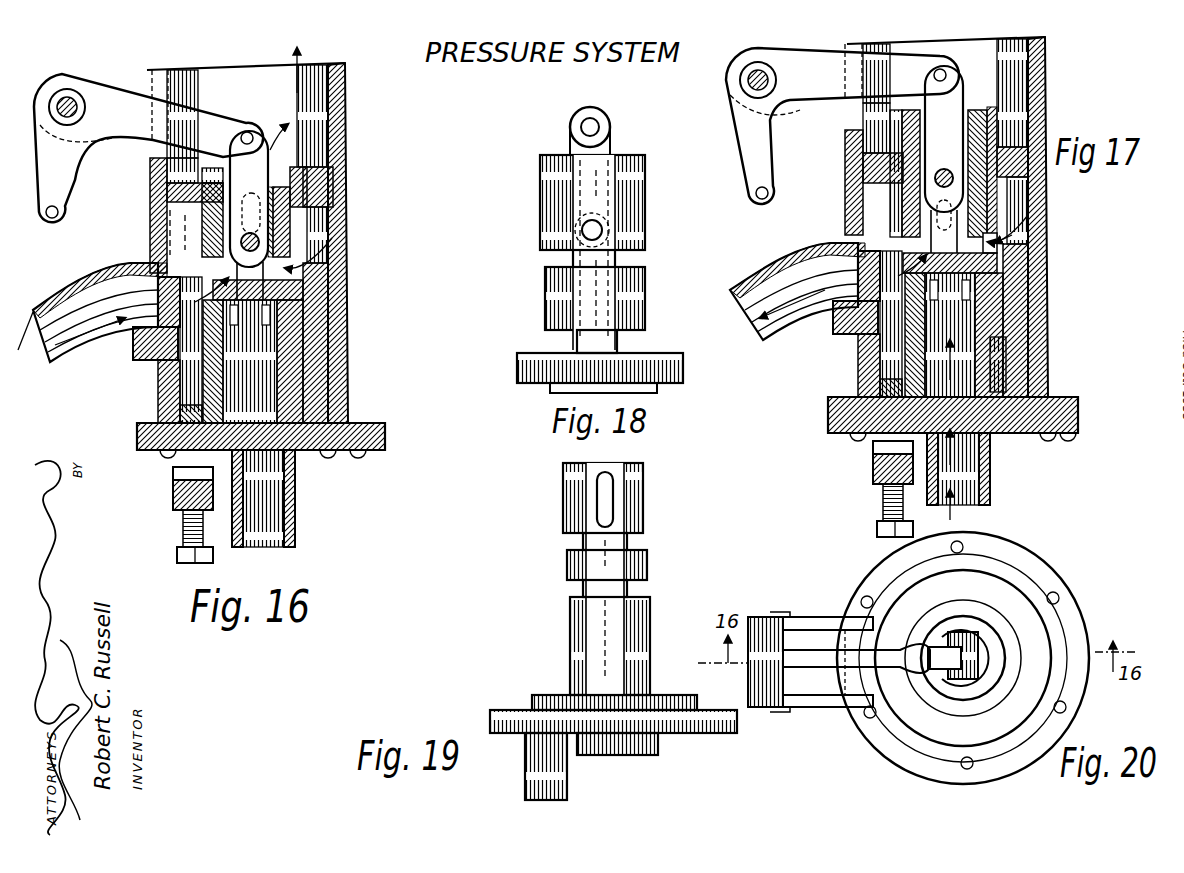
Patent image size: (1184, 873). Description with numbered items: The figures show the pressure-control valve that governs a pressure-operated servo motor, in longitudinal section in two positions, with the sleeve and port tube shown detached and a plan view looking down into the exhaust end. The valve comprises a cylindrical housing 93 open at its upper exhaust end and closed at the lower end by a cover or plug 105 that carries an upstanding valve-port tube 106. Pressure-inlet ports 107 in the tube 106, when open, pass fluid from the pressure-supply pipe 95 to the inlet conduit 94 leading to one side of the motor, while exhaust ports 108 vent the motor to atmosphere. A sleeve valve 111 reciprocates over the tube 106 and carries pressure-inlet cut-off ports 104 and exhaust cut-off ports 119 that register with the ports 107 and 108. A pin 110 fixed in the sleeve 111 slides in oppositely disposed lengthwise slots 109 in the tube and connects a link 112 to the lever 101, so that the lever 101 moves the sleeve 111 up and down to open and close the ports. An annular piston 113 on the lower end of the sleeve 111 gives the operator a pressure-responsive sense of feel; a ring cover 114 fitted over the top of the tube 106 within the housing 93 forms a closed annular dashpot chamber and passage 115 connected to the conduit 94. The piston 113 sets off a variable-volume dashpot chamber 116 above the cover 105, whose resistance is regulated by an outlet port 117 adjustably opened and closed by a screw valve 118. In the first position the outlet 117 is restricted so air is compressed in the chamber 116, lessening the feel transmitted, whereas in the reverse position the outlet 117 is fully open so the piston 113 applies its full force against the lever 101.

In FIG. 16, the cylindrical housing 93 is at (346, 70).
In FIG. 17, the cylindrical housing 93 is at (1045, 48).
In FIG. 20, the cylindrical housing 93 is at (1040, 598).
In FIG. 16, the inlet conduit 94 is at (80, 298).
In FIG. 17, the inlet conduit 94 is at (790, 266).
In FIG. 16, the pressure-supply pipe 95 is at (295, 520).
In FIG. 17, the pressure-supply pipe 95 is at (991, 476).
In FIG. 16, the lever 101 is at (128, 90).
In FIG. 17, the lever 101 is at (818, 60).
In FIG. 20, the lever 101 is at (826, 668).
In FIG. 16, the pressure-inlet cut-off ports 104 is at (303, 350).
In FIG. 17, the pressure-inlet cut-off ports 104 is at (1000, 292).
In FIG. 18, the pressure-inlet cut-off ports 104 is at (643, 345).
In FIG. 16, the cover or plug 105 is at (322, 456).
In FIG. 17, the cover or plug 105 is at (1060, 436).
In FIG. 19, the cover or plug 105 is at (512, 722).
In FIG. 16, the valve-port tube 106 is at (178, 198).
In FIG. 17, the valve-port tube 106 is at (980, 360).
In FIG. 19, the valve-port tube 106 is at (588, 622).
In FIG. 20, the valve-port tube 106 is at (980, 622).
In FIG. 16, the pressure-inlet port 107 is at (283, 313).
In FIG. 17, the pressure-inlet port 107 is at (948, 285).
In FIG. 19, the pressure-inlet port 107 is at (645, 595).
In FIG. 16, the exhaust port 108 is at (298, 291).
In FIG. 17, the exhaust port 108 is at (1012, 238).
In FIG. 19, the exhaust port 108 is at (640, 545).
In FIG. 16, the slots 109 is at (212, 210).
In FIG. 17, the slots 109 is at (938, 173).
In FIG. 19, the slots 109 is at (612, 503).
In FIG. 16, the pin 110 is at (241, 246).
In FIG. 17, the pin 110 is at (944, 178).
In FIG. 18, the pin 110 is at (582, 231).
In FIG. 16, the sleeve valve 111 is at (150, 174).
In FIG. 17, the sleeve valve 111 is at (990, 125).
In FIG. 18, the sleeve valve 111 is at (646, 182).
In FIG. 20, the sleeve valve 111 is at (1005, 630).
In FIG. 16, the link 112 is at (250, 135).
In FIG. 17, the link 112 is at (958, 105).
In FIG. 18, the link 112 is at (604, 140).
In FIG. 20, the link 112 is at (957, 670).
In FIG. 16, the annular piston 113 is at (158, 388).
In FIG. 17, the annular piston 113 is at (1046, 312).
In FIG. 18, the annular piston 113 is at (520, 379).
In FIG. 16, the ring cover 114 is at (334, 172).
In FIG. 17, the ring cover 114 is at (1029, 180).
In FIG. 20, the ring cover 114 is at (975, 582).
In FIG. 16, the annular dashpot chamber and passage 115 is at (318, 240).
In FIG. 17, the annular dashpot chamber and passage 115 is at (1017, 210).
In FIG. 16, the dashpot chamber 116 is at (182, 410).
In FIG. 17, the dashpot chamber 116 is at (882, 368).
In FIG. 16, the outlet port 117 is at (173, 474).
In FIG. 17, the outlet port 117 is at (875, 450).
In FIG. 16, the screw valve 118 is at (183, 528).
In FIG. 17, the screw valve 118 is at (883, 500).
In FIG. 16, the exhaust cut-off ports 119 is at (340, 262).
In FIG. 17, the exhaust cut-off ports 119 is at (1034, 205).
In FIG. 18, the exhaust cut-off ports 119 is at (630, 263).